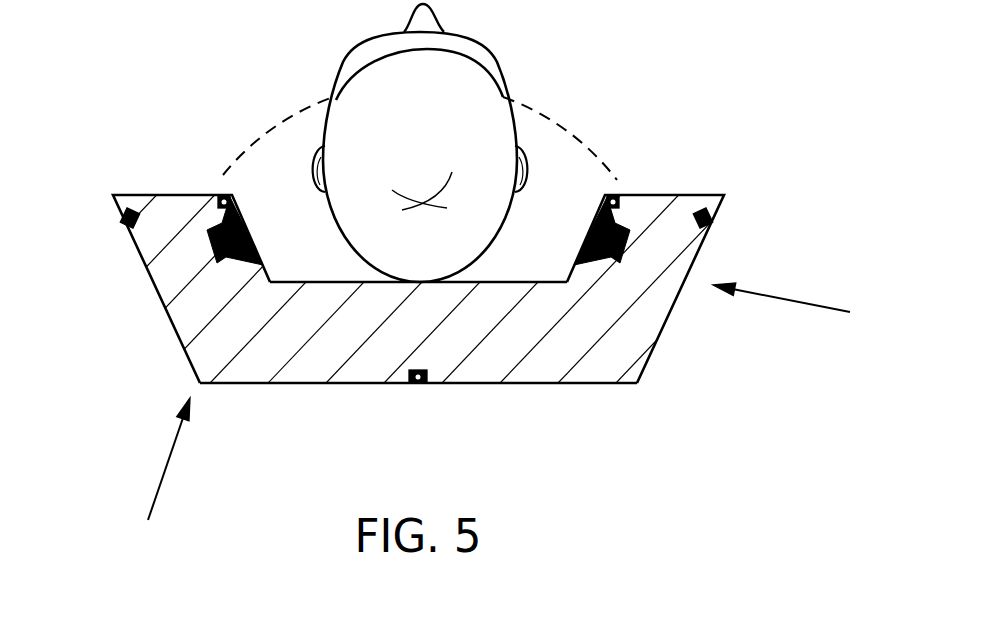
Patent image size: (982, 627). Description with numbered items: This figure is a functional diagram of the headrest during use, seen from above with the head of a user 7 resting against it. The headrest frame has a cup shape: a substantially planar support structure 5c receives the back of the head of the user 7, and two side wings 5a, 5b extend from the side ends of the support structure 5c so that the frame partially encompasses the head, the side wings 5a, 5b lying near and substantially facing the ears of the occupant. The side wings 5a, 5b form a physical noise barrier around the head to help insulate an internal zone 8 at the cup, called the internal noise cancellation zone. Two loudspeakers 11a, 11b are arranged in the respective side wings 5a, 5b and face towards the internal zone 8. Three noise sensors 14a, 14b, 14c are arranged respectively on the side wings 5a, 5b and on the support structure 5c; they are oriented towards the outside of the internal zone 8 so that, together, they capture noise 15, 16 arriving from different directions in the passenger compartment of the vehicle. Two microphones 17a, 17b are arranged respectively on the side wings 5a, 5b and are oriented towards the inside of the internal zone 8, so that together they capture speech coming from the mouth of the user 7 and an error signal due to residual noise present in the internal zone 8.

The user 7 is at (363, 118).
The internal zone 8 is at (563, 118).
The side wing 5a is at (665, 233).
The side wing 5b is at (171, 236).
The support structure 5c is at (488, 283).
The loudspeaker 11a is at (613, 245).
The loudspeaker 11b is at (224, 245).
The noise sensor 14a is at (703, 218).
The noise sensor 14b is at (131, 218).
The noise sensor 14c is at (418, 380).
The noise 15 is at (161, 482).
The noise 16 is at (818, 305).
The microphone 17a is at (614, 198).
The microphone 17b is at (223, 198).